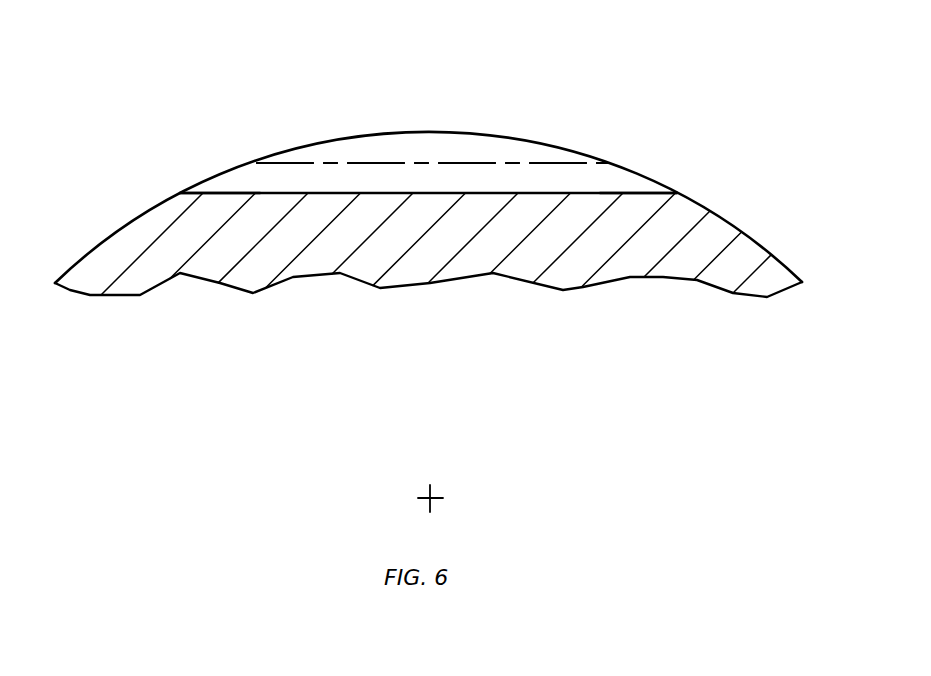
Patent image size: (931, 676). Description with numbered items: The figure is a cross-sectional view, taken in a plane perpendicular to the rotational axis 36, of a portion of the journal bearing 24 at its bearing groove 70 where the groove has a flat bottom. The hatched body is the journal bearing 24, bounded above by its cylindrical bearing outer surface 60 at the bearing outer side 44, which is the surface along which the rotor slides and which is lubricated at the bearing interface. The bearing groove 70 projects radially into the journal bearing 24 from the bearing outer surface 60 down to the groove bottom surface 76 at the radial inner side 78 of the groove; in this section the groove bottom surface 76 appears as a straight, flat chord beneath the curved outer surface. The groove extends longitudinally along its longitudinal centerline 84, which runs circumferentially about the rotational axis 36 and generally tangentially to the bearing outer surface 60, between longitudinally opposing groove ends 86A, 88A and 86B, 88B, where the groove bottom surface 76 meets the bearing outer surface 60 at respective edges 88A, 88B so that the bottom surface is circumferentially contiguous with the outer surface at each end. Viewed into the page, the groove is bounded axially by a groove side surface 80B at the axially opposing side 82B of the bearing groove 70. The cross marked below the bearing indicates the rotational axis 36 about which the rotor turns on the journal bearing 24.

The journal bearing 24 is at (735, 103).
The rotational axis 36 is at (432, 494).
The bearing outer side 44 is at (433, 131).
The bearing outer surface 60 is at (449, 166).
The bearing groove 70 is at (482, 152).
The groove bottom surface 76 is at (428, 145).
The radial inner side 78 is at (607, 193).
The groove side surface 80B is at (343, 112).
The axially opposing side 82B is at (355, 150).
The longitudinal centerline 84 is at (550, 163).
The groove end 86A is at (181, 157).
The edge 88A is at (180, 193).
The groove end 86B is at (682, 156).
The edge 88B is at (677, 193).